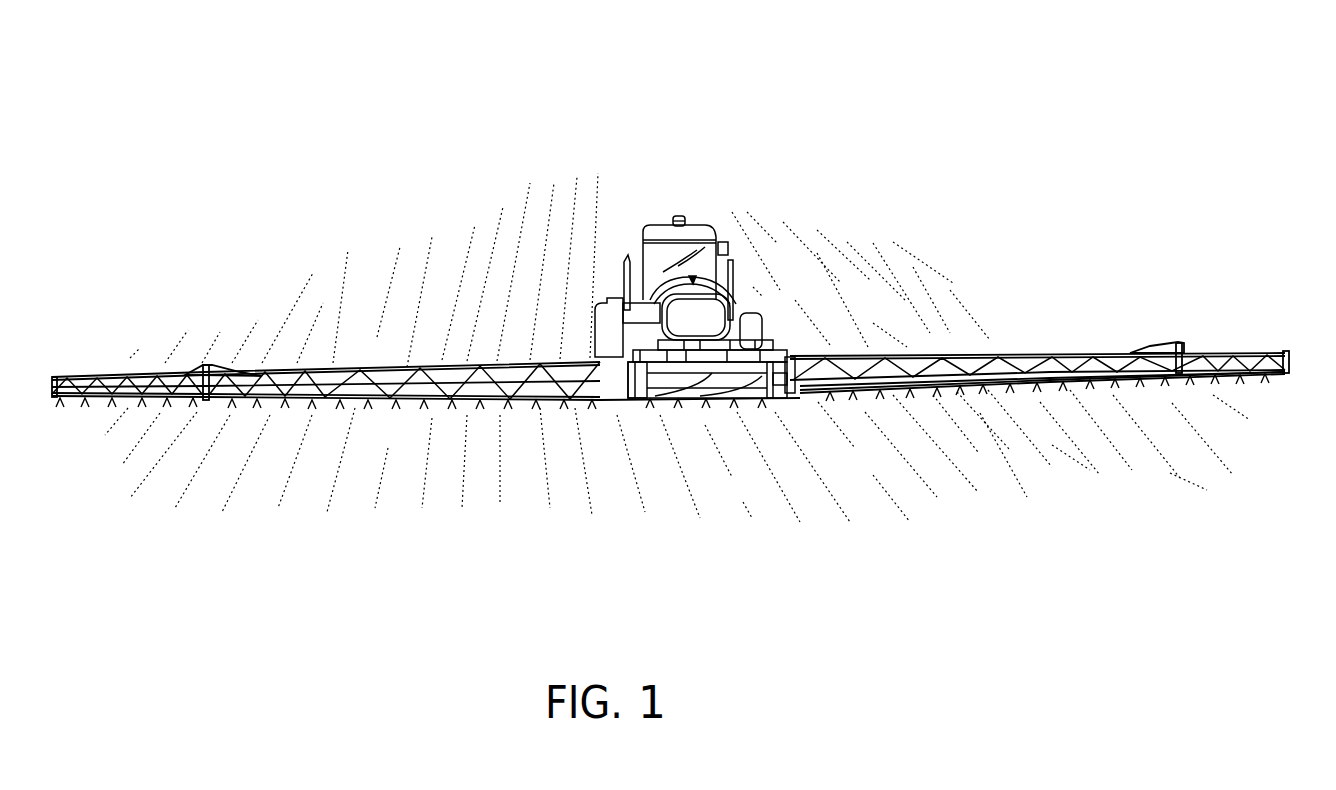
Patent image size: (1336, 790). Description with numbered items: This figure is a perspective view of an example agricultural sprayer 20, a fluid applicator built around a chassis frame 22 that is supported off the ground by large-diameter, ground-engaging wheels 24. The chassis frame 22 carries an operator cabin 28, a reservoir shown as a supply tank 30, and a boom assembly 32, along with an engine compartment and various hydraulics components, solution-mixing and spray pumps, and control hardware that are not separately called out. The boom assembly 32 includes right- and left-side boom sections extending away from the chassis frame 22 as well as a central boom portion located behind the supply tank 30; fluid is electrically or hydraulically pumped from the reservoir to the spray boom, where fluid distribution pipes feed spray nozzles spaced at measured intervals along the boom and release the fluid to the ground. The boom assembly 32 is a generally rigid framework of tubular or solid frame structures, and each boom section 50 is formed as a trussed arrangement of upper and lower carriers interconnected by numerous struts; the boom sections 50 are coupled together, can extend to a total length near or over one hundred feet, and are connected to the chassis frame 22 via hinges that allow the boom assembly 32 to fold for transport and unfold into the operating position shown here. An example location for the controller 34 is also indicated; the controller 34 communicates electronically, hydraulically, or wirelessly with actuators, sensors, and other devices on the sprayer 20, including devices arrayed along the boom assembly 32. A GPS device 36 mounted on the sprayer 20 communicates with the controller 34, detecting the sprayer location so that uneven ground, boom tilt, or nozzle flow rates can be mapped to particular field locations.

The agricultural sprayer 20 is at (199, 96).
The chassis frame 22 is at (603, 292).
The ground-engaging wheels 24 is at (593, 323).
The operator cabin 28 is at (712, 226).
The supply tank 30 is at (737, 280).
The boom assembly 32 is at (988, 333).
The controller 34 is at (630, 256).
The GPS device 36 is at (679, 214).
The boom section 50 is at (450, 365).